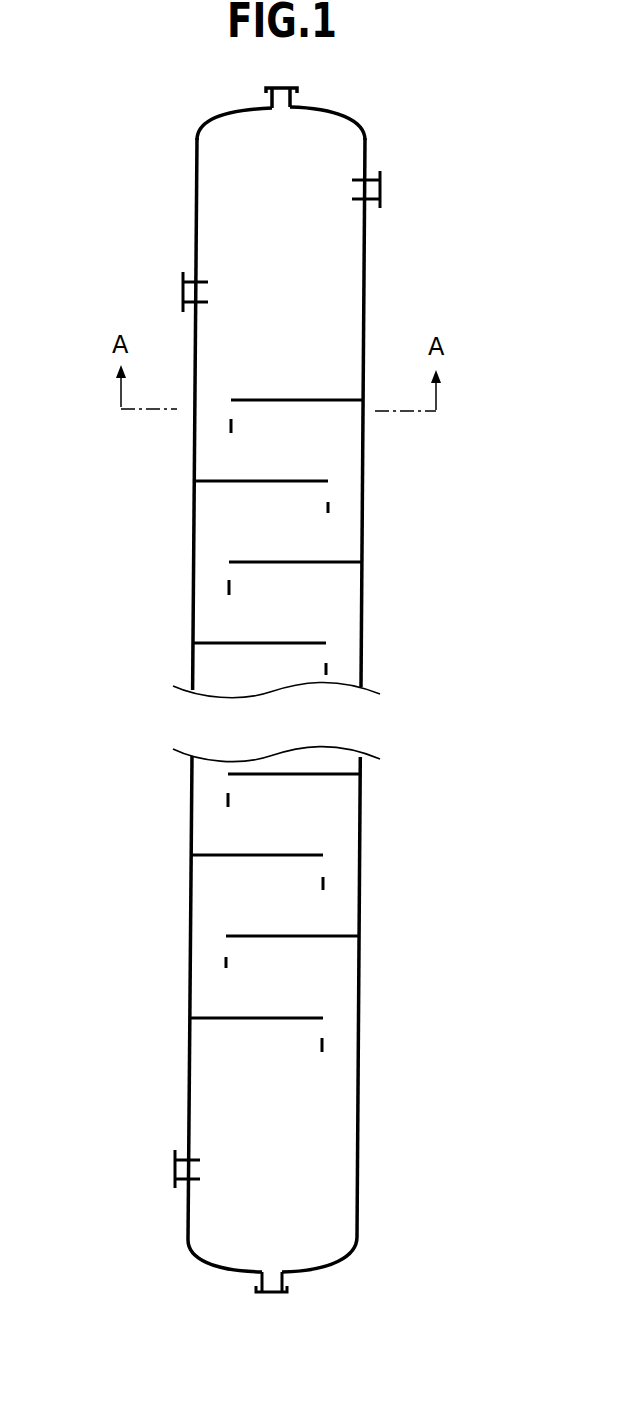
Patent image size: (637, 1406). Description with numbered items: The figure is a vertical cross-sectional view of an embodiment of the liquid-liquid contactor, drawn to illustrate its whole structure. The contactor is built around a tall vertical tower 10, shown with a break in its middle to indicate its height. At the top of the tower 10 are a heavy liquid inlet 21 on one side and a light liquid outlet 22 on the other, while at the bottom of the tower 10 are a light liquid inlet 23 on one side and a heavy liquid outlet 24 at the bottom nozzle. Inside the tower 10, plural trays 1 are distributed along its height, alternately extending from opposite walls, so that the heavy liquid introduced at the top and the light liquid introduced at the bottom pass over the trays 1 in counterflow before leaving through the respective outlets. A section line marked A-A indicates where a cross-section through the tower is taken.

The tower 10 is at (361, 80).
The tray 1 is at (280, 399).
The heavy liquid inlet 21 is at (183, 292).
The light liquid outlet 22 is at (380, 188).
The light liquid inlet 23 is at (175, 1170).
The heavy liquid outlet 24 is at (270, 1295).